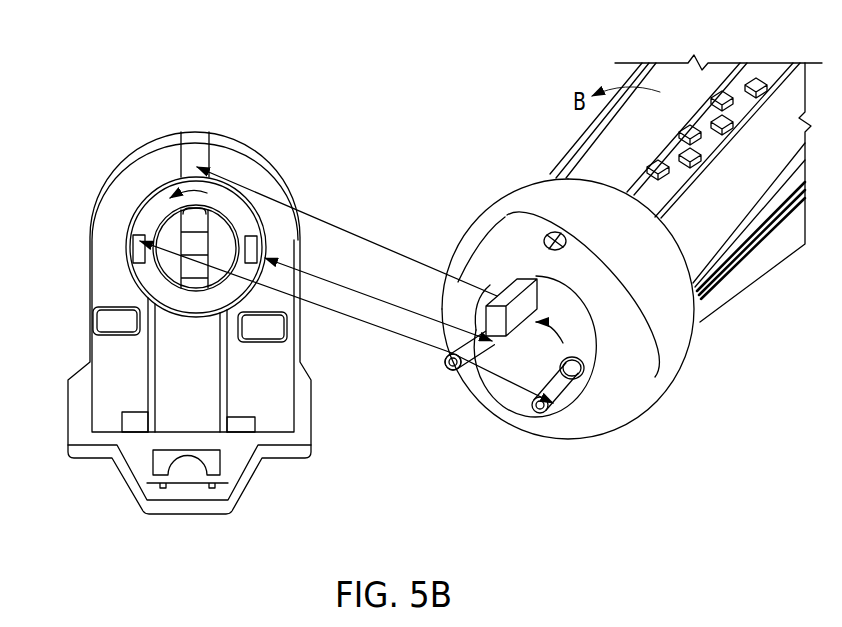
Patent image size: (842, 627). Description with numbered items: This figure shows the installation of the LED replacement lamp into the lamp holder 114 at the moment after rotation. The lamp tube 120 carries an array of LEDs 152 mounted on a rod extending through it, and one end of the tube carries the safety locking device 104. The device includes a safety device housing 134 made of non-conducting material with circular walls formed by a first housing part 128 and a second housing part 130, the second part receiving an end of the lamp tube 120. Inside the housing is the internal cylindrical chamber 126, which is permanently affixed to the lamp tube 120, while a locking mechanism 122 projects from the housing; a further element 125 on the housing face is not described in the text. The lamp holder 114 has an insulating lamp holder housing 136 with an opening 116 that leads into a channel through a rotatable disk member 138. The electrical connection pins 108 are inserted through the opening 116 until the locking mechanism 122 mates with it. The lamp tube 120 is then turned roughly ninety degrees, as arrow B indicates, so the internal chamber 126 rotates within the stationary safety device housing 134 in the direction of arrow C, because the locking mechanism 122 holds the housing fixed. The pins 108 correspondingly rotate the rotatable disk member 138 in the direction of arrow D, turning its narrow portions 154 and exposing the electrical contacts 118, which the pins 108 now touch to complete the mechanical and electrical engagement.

The safety locking device 104 is at (456, 206).
The electrical connection pins 108 is at (565, 400).
The lamp holder 114 is at (135, 113).
The opening 116 is at (200, 132).
The electrical contacts 118 is at (127, 243).
The lamp tube 120 is at (727, 283).
The locking mechanism 122 is at (515, 290).
The screw 125 is at (548, 232).
The internal cylindrical chamber 126 is at (513, 380).
The first housing part 128 is at (640, 365).
The second housing part 130 is at (678, 338).
The safety device housing 134 is at (480, 227).
The lamp holder housing 136 is at (266, 148).
The rotatable disk member 138 is at (157, 207).
The array of LEDs 152 is at (720, 93).
The narrow portions 154 is at (123, 252).